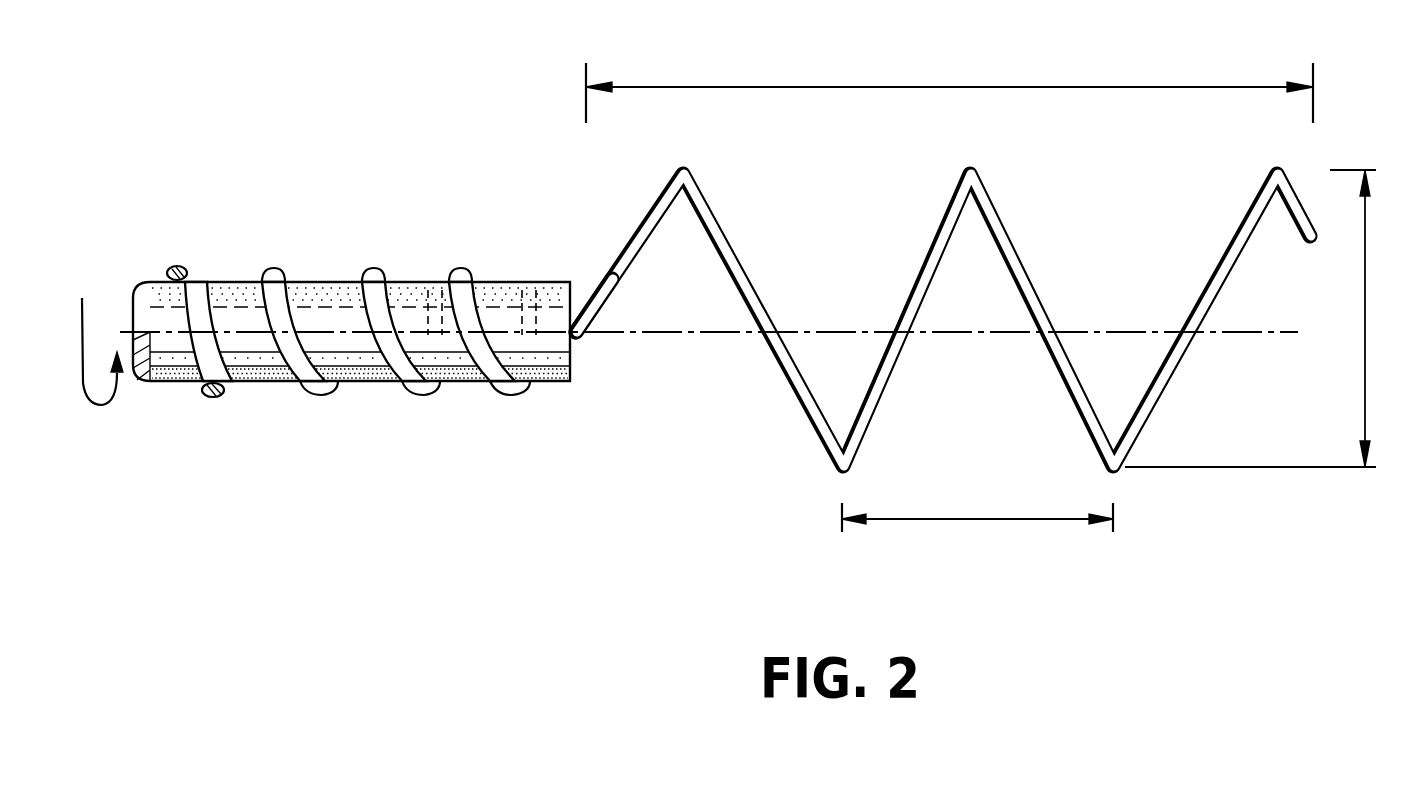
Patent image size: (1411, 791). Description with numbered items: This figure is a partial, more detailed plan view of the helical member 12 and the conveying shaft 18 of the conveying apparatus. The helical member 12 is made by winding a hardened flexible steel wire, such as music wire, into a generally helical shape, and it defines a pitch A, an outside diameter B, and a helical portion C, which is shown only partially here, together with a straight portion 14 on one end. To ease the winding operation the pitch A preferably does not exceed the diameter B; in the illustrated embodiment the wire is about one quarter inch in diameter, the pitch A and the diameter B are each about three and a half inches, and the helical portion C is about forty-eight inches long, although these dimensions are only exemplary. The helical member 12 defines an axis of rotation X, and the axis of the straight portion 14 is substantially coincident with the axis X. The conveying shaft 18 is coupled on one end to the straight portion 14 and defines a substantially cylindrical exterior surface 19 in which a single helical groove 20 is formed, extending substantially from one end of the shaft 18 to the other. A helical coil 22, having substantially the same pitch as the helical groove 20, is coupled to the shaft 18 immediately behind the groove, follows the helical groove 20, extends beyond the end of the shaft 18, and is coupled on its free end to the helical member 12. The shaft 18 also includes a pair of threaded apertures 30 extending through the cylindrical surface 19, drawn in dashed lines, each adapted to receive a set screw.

The helical member 12 is at (800, 403).
The straight portion 14 is at (578, 323).
The conveying shaft 18 is at (268, 390).
The cylindrical exterior surface 19 is at (228, 288).
The helical groove 20 is at (289, 290).
The helical coil 22 is at (206, 390).
The threaded apertures 30 is at (430, 288).
The pitch A is at (940, 520).
The outside diameter B is at (1367, 273).
The helical portion C is at (892, 84).
The axis of rotation X is at (1272, 333).